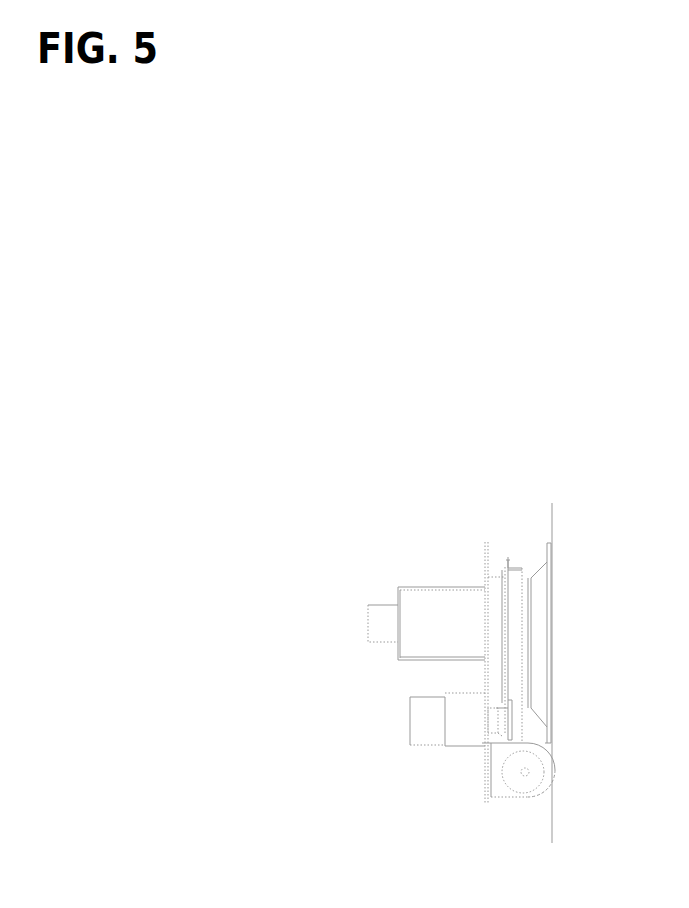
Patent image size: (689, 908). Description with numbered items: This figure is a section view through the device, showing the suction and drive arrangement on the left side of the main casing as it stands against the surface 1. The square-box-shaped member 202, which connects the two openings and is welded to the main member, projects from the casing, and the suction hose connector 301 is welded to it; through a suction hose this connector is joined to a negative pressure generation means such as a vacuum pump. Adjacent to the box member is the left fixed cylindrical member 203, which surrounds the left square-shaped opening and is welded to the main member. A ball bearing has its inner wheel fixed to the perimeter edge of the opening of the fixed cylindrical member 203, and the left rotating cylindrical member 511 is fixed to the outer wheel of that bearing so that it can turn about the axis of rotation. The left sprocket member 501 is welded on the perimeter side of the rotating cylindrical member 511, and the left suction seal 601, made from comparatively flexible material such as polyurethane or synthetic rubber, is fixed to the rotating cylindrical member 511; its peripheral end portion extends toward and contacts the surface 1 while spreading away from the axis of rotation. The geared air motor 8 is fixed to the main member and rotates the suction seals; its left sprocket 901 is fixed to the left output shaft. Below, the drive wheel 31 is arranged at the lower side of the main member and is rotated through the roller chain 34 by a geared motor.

The surface 1 is at (552, 820).
The geared air motor 8 is at (427, 718).
The drive wheel 31 is at (548, 771).
The roller chain 34 is at (502, 798).
The square-box-shaped member 202 is at (438, 587).
The left fixed cylindrical member 203 is at (502, 577).
The suction hose connector 301 is at (380, 605).
The left sprocket member 501 is at (507, 566).
The left rotating cylindrical member 511 is at (520, 578).
The left suction seal 601 is at (538, 605).
The left sprocket 901 is at (510, 720).